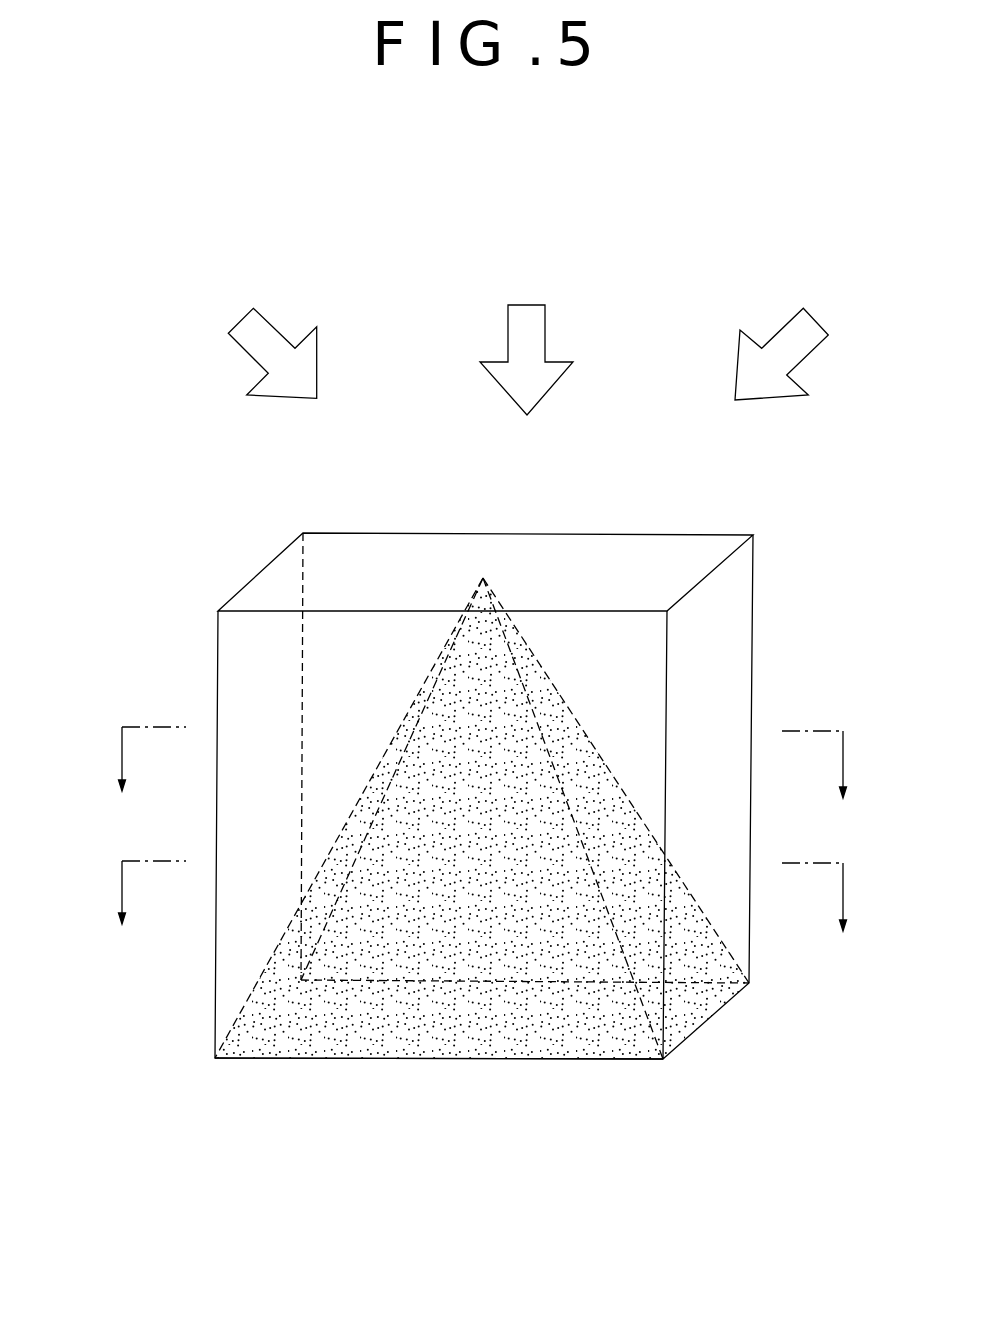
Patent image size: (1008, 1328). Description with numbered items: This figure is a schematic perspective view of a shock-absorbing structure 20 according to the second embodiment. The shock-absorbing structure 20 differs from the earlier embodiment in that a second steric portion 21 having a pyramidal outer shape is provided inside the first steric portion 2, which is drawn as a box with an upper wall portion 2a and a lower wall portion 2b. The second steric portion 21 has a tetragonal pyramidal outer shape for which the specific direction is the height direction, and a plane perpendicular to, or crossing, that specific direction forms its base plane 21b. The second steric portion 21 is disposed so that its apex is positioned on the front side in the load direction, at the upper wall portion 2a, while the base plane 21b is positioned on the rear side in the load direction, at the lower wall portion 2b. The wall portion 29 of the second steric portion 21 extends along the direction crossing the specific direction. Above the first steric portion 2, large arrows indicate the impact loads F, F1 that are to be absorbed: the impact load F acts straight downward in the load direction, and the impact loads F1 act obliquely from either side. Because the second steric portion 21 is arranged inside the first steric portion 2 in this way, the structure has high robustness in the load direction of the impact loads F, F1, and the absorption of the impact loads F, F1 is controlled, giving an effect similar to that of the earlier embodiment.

The shock-absorbing structure 20 is at (148, 335).
The first steric portion 2 is at (762, 612).
The upper wall portion 2a is at (355, 556).
The lower wall portion 2b is at (518, 1071).
The second steric portion 21 is at (370, 753).
The base plane 21b is at (312, 1060).
The wall portion 29 is at (315, 875).
The impact load F is at (508, 318).
The impact load F1 is at (280, 333).